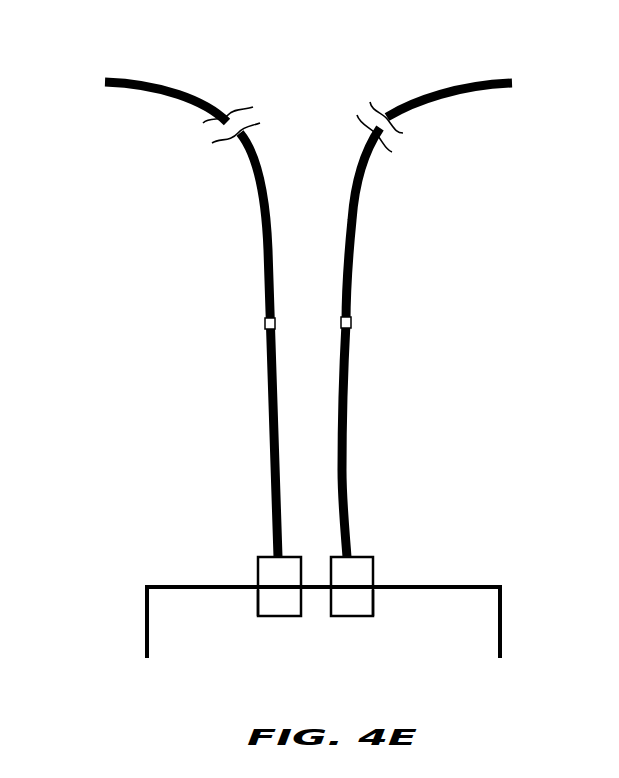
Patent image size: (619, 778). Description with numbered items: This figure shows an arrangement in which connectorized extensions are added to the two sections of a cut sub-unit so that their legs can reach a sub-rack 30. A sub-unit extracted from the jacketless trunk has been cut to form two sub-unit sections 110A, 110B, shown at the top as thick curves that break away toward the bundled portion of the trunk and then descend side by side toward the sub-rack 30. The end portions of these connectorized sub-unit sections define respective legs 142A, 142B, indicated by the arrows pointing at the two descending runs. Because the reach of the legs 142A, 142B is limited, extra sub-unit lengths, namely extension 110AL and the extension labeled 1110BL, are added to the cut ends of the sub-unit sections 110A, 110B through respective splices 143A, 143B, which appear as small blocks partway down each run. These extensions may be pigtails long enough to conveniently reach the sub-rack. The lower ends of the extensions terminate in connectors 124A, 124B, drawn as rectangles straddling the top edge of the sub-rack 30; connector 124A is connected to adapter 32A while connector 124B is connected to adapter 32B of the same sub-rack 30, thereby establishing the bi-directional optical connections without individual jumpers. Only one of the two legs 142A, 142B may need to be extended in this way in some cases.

The sub-rack 30 is at (158, 586).
The sub-unit section 110A is at (198, 92).
The sub-unit section 110B is at (462, 83).
The extension 110AL is at (272, 452).
The second lead wire lower portion 1110BL is at (347, 432).
The leg 142A is at (198, 207).
The leg 142B is at (434, 203).
The splice 143A is at (264, 325).
The splice 143B is at (352, 322).
The connector 124A is at (267, 557).
The connector 124B is at (357, 557).
The adapter 32A is at (258, 605).
The adapter 32B is at (373, 600).